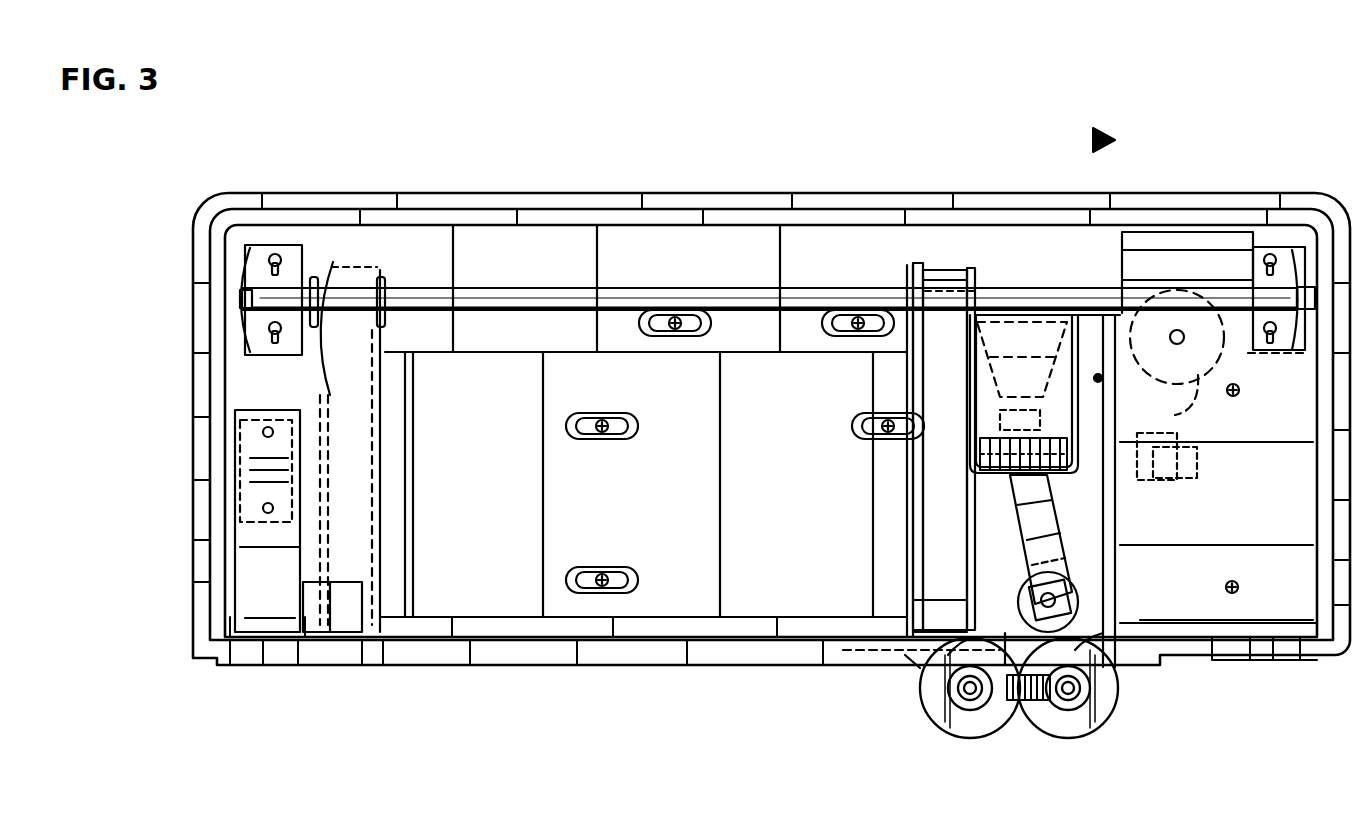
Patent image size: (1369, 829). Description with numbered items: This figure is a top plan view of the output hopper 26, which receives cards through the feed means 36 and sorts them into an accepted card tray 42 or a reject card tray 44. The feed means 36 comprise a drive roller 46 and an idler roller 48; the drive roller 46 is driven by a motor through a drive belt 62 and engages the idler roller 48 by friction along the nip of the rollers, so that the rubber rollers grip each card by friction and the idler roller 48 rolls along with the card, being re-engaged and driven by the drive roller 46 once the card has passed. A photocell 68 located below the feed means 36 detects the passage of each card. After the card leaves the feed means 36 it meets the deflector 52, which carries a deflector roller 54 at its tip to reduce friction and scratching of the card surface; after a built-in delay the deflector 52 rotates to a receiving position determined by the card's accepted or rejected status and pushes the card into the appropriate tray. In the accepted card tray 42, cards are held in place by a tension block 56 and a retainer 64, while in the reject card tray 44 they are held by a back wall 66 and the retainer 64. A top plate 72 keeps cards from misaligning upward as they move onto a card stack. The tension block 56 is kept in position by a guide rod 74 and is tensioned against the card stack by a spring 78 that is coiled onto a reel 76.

The output hopper 26 is at (1122, 103).
The feed means 36 is at (820, 760).
The accepted card tray 42 is at (545, 267).
The reject card tray 44 is at (1080, 500).
The drive roller 46 is at (932, 710).
The idler roller 48 is at (1090, 716).
The deflector 52 is at (1048, 548).
The deflector roller 54 is at (1078, 590).
The tension block 56 is at (940, 273).
The drive belt 62 is at (905, 668).
The retainer 64 is at (978, 637).
The back wall 66 is at (1120, 392).
The photocell 68 is at (988, 725).
The top plate 72 is at (1072, 325).
The guide rod 74 is at (643, 292).
The reel 76 is at (1188, 410).
The spring 78 is at (1045, 290).